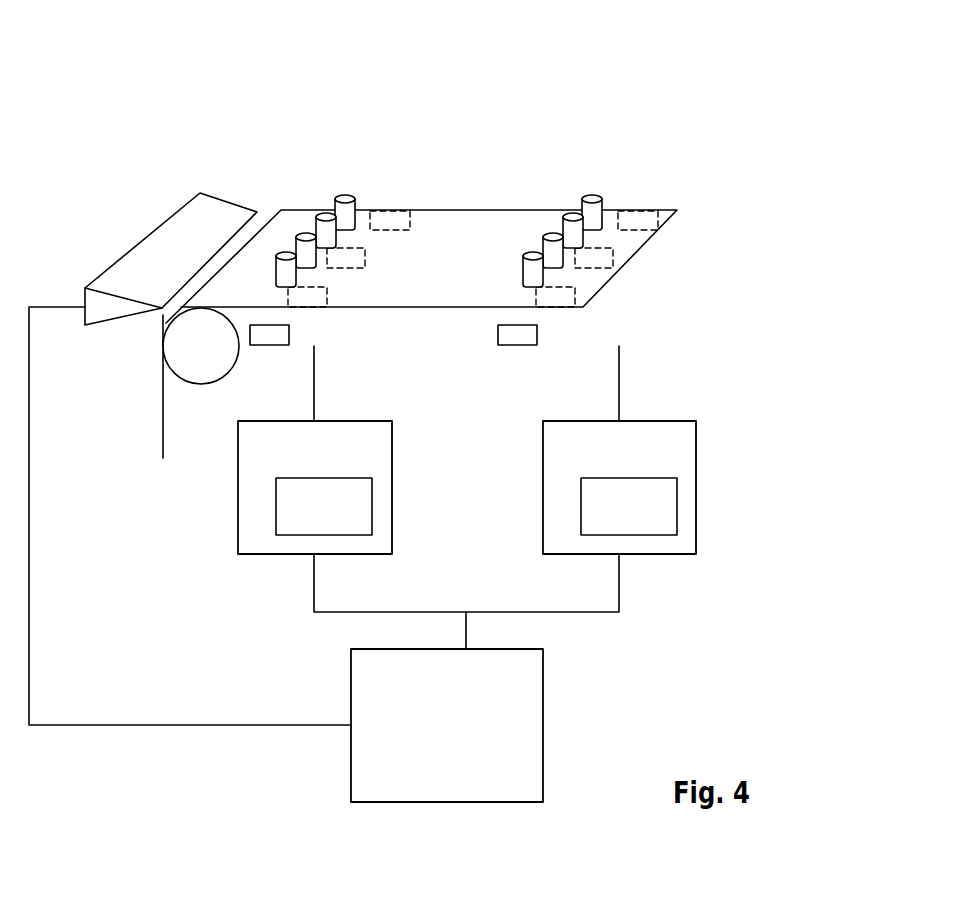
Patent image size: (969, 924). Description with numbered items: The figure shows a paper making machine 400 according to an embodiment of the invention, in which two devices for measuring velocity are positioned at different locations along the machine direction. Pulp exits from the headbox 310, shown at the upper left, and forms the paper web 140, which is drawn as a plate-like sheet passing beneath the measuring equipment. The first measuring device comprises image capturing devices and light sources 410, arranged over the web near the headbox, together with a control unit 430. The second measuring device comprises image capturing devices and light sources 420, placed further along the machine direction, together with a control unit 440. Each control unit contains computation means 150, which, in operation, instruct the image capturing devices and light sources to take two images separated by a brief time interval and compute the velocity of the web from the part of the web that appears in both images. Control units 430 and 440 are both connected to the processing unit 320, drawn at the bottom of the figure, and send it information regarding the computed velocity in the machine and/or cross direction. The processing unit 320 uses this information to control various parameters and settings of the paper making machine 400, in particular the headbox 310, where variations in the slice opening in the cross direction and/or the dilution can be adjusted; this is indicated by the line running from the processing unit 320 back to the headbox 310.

The paper making machine 400 is at (324, 378).
The headbox 310 is at (124, 231).
The paper web 140 is at (468, 248).
The image capturing devices and light sources 410 is at (372, 192).
The image capturing devices and light sources 420 is at (620, 193).
The control unit 430 is at (237, 500).
The control unit 440 is at (696, 498).
The computation means 150 is at (476, 506).
The processing unit 320 is at (447, 725).